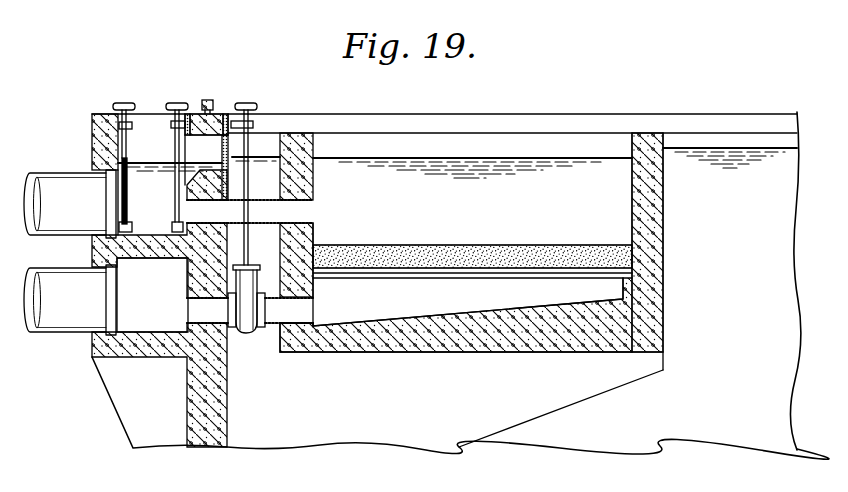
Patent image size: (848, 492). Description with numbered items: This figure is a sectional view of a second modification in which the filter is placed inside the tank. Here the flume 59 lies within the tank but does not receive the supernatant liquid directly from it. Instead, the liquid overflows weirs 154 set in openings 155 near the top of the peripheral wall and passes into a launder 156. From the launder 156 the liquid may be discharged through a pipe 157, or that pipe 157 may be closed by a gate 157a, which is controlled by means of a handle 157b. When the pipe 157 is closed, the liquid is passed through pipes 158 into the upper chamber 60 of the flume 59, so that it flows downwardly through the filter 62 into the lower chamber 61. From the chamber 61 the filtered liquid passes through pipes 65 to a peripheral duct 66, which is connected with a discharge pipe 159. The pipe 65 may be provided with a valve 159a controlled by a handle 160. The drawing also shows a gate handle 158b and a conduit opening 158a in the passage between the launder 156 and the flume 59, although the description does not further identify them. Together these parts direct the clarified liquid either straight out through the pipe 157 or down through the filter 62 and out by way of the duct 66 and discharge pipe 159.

The upper chamber 60 is at (465, 150).
The flume 59 is at (663, 202).
The filter 62 is at (445, 257).
The chamber 61 is at (471, 360).
The launder 156 is at (138, 142).
The pipe 157 is at (68, 193).
The discharge pipe 159 is at (68, 318).
The gate 157a is at (123, 202).
The handle 157b is at (120, 104).
The conduit gate handwheel 158b is at (176, 104).
The weirs 154 is at (212, 160).
The openings 155 is at (202, 147).
The conduit opening 158a is at (189, 195).
The pipes 158 is at (265, 212).
The peripheral duct 66 is at (150, 312).
The handle 160 is at (255, 104).
The pipes 65 is at (270, 328).
The valve 159a is at (245, 326).